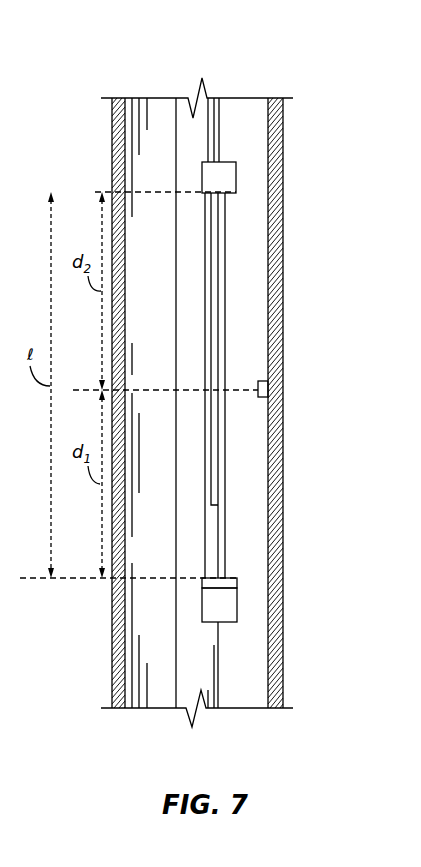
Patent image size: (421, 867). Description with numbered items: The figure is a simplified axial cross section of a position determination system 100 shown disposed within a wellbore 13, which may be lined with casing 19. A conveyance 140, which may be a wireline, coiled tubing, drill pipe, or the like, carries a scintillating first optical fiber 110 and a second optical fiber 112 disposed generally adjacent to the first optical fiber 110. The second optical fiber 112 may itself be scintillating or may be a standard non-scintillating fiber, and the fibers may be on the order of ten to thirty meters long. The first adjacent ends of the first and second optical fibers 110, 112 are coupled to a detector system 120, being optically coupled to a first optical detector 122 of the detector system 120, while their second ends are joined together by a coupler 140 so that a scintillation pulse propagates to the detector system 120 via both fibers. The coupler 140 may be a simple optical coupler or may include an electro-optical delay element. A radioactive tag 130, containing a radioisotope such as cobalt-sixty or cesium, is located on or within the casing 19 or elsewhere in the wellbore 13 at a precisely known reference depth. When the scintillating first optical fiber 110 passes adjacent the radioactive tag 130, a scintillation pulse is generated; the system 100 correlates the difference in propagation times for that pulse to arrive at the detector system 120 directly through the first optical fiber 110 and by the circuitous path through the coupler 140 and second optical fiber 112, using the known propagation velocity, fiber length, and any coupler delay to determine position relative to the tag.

The position determination system 100 is at (241, 40).
The wellbore 13 is at (162, 113).
The casing 19 is at (276, 426).
The conveyance 140 is at (242, 180).
The radioactive tag 130 is at (268, 392).
The second optical fiber 112 is at (213, 505).
The scintillating first optical fiber 110 is at (226, 550).
The first optical detector 122 is at (238, 580).
The detector system 120 is at (238, 605).